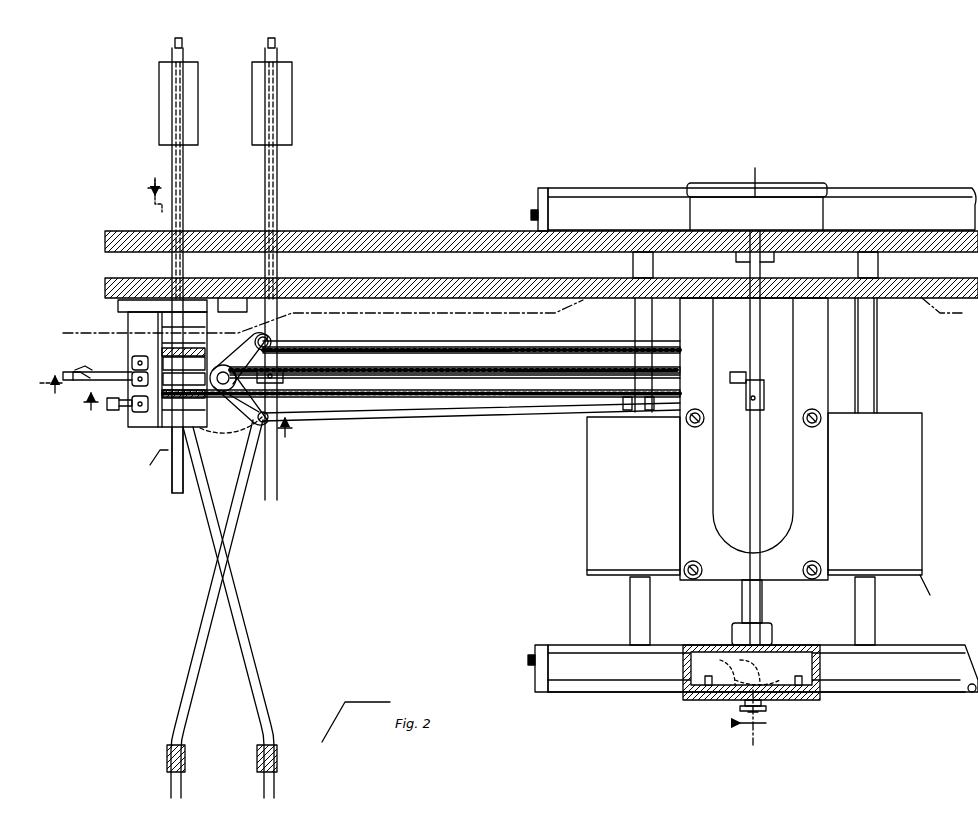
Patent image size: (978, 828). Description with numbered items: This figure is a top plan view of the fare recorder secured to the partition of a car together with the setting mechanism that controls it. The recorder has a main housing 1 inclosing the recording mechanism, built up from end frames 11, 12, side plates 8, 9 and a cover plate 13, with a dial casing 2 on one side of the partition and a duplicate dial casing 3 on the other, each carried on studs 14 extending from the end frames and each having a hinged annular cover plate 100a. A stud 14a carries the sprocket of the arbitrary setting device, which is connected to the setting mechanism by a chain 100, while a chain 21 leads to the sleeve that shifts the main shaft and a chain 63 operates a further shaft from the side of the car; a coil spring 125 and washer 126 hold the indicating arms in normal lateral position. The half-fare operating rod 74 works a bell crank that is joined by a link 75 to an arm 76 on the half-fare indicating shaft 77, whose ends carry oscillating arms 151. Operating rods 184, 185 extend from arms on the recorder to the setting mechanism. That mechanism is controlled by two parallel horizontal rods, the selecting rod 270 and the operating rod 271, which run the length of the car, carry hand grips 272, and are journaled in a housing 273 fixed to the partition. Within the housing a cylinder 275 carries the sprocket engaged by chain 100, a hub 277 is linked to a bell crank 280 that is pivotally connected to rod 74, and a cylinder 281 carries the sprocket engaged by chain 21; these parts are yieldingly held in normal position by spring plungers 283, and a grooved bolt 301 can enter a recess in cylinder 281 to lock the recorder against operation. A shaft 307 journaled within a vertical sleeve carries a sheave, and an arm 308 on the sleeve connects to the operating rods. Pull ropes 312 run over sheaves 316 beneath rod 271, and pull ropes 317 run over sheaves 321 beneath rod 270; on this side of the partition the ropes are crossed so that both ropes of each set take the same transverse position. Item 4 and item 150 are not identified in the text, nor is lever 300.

The main housing 1 is at (676, 578).
The dial casing 2 is at (928, 683).
The duplicate dial casing 3 is at (917, 191).
The section indicator 4 is at (753, 455).
The side plate 8 is at (587, 529).
The side plate 9 is at (910, 525).
The end frame 11 is at (917, 585).
The end frame 12 is at (897, 412).
The cover plate 13 is at (838, 450).
The studs 14 is at (881, 609).
The stud 14a is at (763, 265).
The chain 21 is at (448, 400).
The chain 63 is at (270, 345).
The half-fare operating rod 74 is at (368, 384).
The link 75 is at (733, 378).
The arm 76 is at (748, 380).
The half-fare indicating shaft 77 is at (758, 453).
The chain 100 is at (480, 347).
The hinged annular cover plate 100a is at (872, 195).
The coil spring 125 is at (740, 705).
The washer 126 is at (766, 710).
The bearing housing 150 is at (795, 655).
The oscillating arms 151 is at (740, 668).
The operating rod 184 is at (390, 346).
The operating rod 185 is at (378, 417).
The selecting rod 270 is at (184, 207).
The operating rod 271 is at (278, 213).
The hand grips 272 is at (198, 120).
The housing 273 is at (171, 308).
The cylinder 275 is at (184, 362).
The hub 277 is at (184, 378).
The bell crank 280 is at (62, 372).
The cylinder 281 is at (167, 369).
The spring plungers 283 is at (132, 376).
The bell crank lever 300 is at (250, 340).
The grooved bolt 301 is at (112, 410).
The shaft 307 is at (232, 403).
The arm 308 is at (231, 424).
The pull ropes 312 is at (277, 44).
The sheaves 316 is at (257, 765).
The pull ropes 317 is at (184, 44).
The sheaves 321 is at (186, 760).